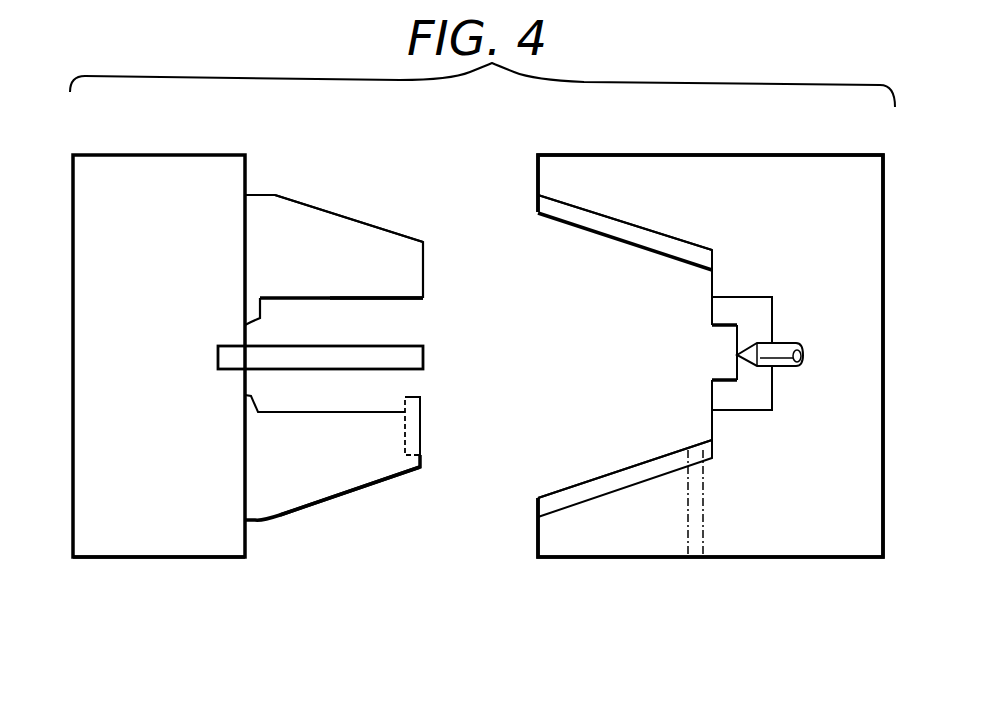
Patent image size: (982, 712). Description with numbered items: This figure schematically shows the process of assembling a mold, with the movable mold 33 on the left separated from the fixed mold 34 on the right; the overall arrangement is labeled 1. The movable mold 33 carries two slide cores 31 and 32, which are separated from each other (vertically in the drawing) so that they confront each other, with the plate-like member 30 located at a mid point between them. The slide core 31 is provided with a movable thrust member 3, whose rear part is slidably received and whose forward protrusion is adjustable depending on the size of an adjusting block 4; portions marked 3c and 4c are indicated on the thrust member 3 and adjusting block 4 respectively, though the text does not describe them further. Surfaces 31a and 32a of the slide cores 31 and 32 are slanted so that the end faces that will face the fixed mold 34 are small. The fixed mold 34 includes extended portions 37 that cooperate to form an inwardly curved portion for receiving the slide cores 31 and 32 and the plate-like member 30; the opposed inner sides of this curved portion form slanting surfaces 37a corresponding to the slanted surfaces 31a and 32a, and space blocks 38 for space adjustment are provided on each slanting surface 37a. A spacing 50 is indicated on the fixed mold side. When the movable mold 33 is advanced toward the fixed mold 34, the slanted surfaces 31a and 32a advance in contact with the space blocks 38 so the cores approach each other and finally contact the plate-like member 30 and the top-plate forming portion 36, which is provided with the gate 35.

The clamping unit 1 is at (213, 582).
The thrust member 3 is at (422, 404).
The recess 3c is at (343, 405).
The adjusting block 4 is at (422, 467).
The projection 4c is at (367, 307).
The plate-like member 30 is at (393, 346).
The slide core 31 is at (297, 493).
The slanted surface 31a is at (352, 494).
The slide core 32 is at (300, 238).
The slanted surface 32a is at (366, 223).
The movable mold 33 is at (158, 173).
The fixed mold 34 is at (770, 180).
The gate 35 is at (772, 338).
The top-plate forming portion 36 is at (728, 297).
The extended portions 37 is at (597, 173).
The slanting surfaces 37a is at (645, 231).
The space blocks 38 is at (620, 240).
The gap 50 is at (714, 503).